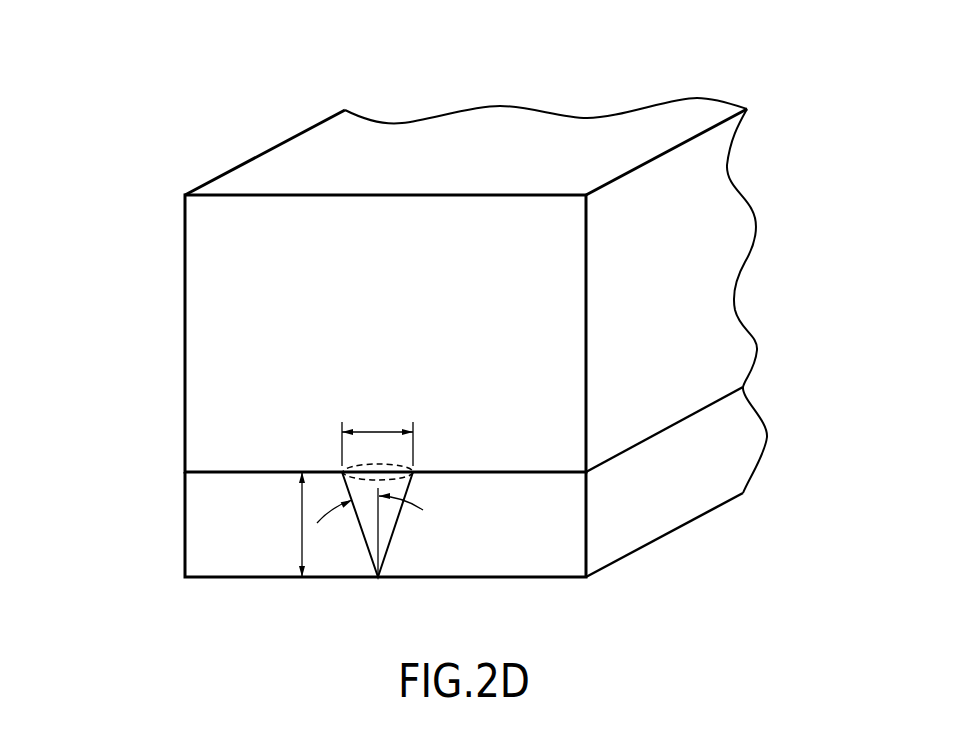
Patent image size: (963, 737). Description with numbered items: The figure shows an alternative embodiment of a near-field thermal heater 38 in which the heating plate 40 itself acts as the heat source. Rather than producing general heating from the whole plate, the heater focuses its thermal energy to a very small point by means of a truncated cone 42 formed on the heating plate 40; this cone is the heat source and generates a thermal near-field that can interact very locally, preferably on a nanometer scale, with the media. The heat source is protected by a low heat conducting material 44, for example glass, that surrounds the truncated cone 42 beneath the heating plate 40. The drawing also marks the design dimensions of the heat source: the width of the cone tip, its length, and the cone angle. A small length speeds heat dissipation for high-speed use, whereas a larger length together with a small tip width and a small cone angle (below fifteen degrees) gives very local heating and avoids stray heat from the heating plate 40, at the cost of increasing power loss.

The near-field thermal heater 38 is at (385, 88).
The heating plate 40 is at (184, 372).
The truncated cone 42 is at (381, 586).
The low heat conducting material 44 is at (680, 500).